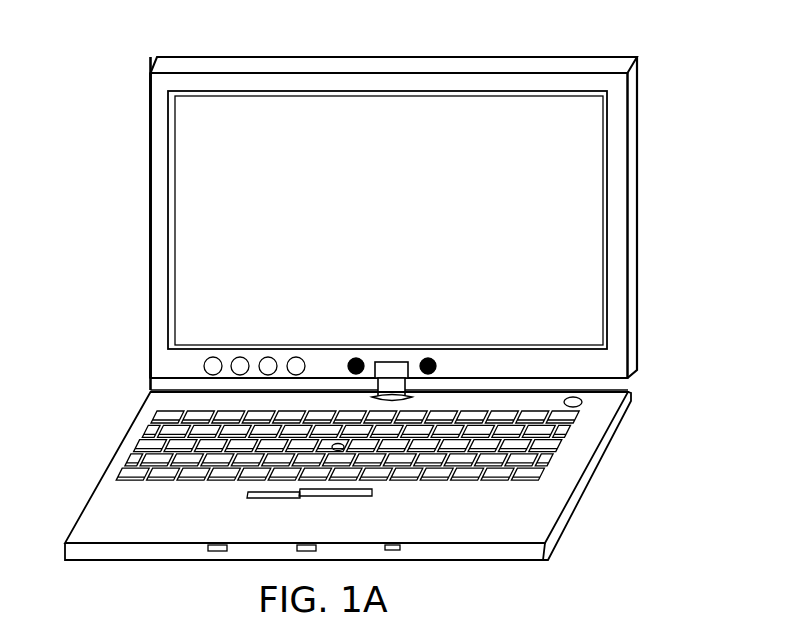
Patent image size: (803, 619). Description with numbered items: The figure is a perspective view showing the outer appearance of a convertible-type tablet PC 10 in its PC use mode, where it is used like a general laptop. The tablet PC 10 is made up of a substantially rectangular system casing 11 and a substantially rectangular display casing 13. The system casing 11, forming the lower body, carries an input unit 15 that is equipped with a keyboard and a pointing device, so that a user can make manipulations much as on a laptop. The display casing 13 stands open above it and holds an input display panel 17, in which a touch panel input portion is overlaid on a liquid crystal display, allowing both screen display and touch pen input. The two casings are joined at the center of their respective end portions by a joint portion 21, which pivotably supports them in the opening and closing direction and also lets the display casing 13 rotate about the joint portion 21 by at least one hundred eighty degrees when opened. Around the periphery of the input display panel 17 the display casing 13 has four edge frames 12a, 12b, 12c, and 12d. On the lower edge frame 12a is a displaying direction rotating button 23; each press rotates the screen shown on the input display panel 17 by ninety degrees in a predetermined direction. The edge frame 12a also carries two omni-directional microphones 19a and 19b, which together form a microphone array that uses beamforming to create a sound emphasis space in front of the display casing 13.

The tablet PC 10 is at (89, 42).
The system casing 11 is at (562, 524).
The edge frame 12a is at (497, 362).
The edge frame 12b is at (617, 127).
The edge frame 12c is at (385, 68).
The edge frame 12d is at (163, 210).
The display casing 13 is at (637, 228).
The input unit 15 is at (570, 437).
The input display panel 17 is at (387, 207).
The omni-directional microphone 19a is at (356, 357).
The omni-directional microphone 19b is at (428, 357).
The joint portion 21 is at (390, 361).
The displaying direction rotating button 23 is at (205, 367).